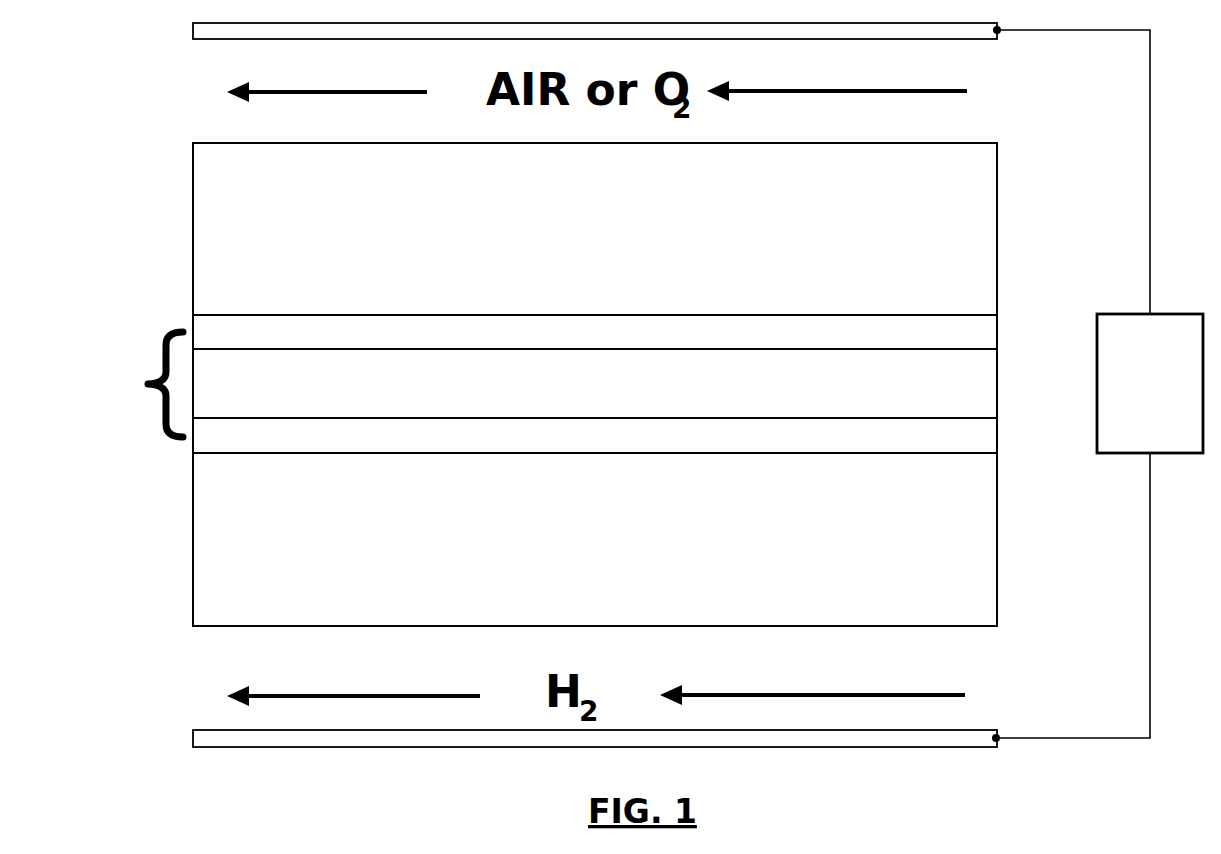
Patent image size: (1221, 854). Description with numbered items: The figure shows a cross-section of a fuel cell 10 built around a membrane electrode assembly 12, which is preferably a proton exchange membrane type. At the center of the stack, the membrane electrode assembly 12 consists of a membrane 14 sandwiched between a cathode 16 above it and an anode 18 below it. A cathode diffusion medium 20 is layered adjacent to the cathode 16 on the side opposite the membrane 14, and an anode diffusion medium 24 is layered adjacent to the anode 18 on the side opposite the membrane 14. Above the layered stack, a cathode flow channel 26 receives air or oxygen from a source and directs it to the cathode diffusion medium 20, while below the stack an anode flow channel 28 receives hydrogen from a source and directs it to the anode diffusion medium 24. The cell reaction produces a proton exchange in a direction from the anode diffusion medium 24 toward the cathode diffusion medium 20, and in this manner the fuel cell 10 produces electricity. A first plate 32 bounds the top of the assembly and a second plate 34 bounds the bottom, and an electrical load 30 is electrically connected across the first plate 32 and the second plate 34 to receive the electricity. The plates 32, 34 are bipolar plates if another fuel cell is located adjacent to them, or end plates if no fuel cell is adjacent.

The fuel cell 10 is at (120, 151).
The membrane electrode assembly 12 is at (146, 382).
The membrane 14 is at (595, 383).
The cathode 16 is at (595, 332).
The anode 18 is at (595, 435).
The cathode diffusion medium 20 is at (595, 229).
The anode diffusion medium 24 is at (595, 539).
The cathode flow channel 26 is at (597, 79).
The anode flow channel 28 is at (596, 681).
The electrical load 30 is at (1097, 381).
The first plate 32 is at (960, 40).
The second plate 34 is at (683, 730).